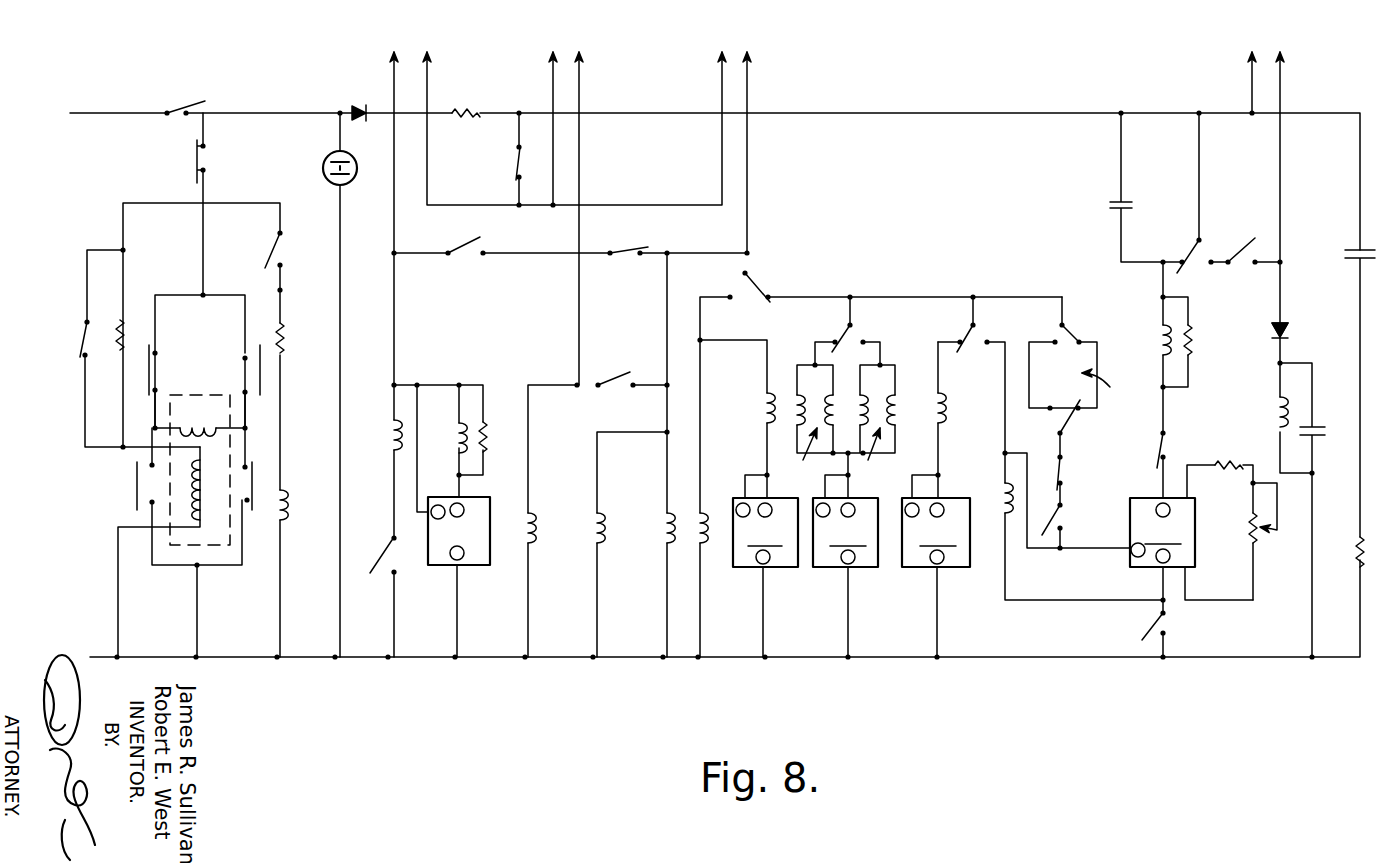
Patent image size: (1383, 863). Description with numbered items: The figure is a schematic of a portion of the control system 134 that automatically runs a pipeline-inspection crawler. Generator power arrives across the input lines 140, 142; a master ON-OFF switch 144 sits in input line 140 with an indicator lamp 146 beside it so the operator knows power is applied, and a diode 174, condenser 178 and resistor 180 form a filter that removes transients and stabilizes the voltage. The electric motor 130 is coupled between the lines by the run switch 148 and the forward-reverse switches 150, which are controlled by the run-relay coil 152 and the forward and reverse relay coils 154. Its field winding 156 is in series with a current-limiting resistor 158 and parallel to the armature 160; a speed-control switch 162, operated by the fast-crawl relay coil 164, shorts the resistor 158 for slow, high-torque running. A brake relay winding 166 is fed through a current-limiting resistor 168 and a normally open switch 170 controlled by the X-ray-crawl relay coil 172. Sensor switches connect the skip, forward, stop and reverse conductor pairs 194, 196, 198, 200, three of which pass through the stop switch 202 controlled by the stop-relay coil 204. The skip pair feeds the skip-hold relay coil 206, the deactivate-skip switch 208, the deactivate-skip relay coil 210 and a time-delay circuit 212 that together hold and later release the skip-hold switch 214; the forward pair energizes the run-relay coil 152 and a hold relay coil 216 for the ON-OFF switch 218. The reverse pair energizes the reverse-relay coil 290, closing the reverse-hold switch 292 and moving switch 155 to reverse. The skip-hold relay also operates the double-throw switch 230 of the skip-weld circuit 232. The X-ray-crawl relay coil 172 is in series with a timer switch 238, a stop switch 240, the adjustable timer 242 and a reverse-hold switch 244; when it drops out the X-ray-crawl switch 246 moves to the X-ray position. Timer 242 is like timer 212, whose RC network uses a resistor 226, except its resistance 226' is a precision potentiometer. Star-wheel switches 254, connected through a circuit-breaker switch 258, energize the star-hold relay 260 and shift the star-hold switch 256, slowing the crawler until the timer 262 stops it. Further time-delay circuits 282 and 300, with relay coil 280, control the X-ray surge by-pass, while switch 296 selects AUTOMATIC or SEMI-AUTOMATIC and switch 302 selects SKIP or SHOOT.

The electric motor 130 is at (218, 375).
The control system 134 is at (550, 677).
The input line 140 is at (114, 113).
The input line 142 is at (101, 657).
The master ON-OFF switch 144 is at (182, 105).
The indicator lamp 146 is at (322, 165).
The run switch 148 is at (194, 161).
The forward-reverse switch 150 is at (153, 355).
The run-relay coil 152 is at (666, 543).
The forward and reverse relay coils 154 is at (838, 430).
The reverse switch 155 is at (838, 336).
The field winding 156 is at (180, 504).
The current-limiting resistor 158 is at (115, 328).
The armature 160 is at (215, 426).
The speed-control switch 162 is at (85, 350).
The fast-crawl relay coil 164 is at (943, 423).
The brake relay winding 166 is at (292, 510).
The current-limiting resistor 168 is at (284, 334).
The brake switch 170 is at (271, 255).
The X-ray-crawl relay coil 172 is at (1160, 333).
The diode 174 is at (360, 103).
The condenser 178 is at (1358, 250).
The resistor 180 is at (1353, 557).
The skip pair of conductors 194 is at (420, 62).
The forward pair of conductors 196 is at (745, 62).
The stop pair of conductors 198 is at (1253, 66).
The reverse pair of conductors 200 is at (580, 58).
The stop switch 202 is at (515, 162).
The stop-relay coil 204 is at (1273, 412).
The skip-hold relay coil 206 is at (386, 424).
The deactivate-skip switch 208 is at (378, 568).
The deactivate-skip relay coil 210 is at (457, 421).
The time-delay circuit 212 is at (474, 558).
The skip-hold switch 214 is at (498, 230).
The hold relay coil 216 is at (600, 516).
The ON-OFF switch 218 is at (628, 256).
The resistor 226 is at (722, 476).
The precision potentiometer 226' is at (1249, 530).
The double-throw switch 230 is at (1074, 334).
The skip-weld circuit 232 is at (1117, 389).
The timer switch 238 is at (1184, 255).
The stop switch 240 is at (1157, 455).
The adjustable timer 242 is at (1191, 555).
The reverse-hold switch 244 is at (1165, 625).
The X-ray-crawl switch 246 is at (756, 284).
The star-wheel switches 254 is at (1068, 510).
The star-hold switch 256 is at (964, 336).
The circuit-breaker switch 258 is at (1068, 467).
The star-hold relay 260 is at (1005, 497).
The timer 262 is at (936, 579).
The relay coil 280 is at (765, 406).
The time-delay circuit 282 is at (765, 579).
The reverse-relay coil 290 is at (537, 525).
The reverse-hold switch 292 is at (630, 392).
The automatic/semi-automatic switch 296 is at (1242, 255).
The time-delay circuit 300 is at (845, 579).
The skip/shoot switch 302 is at (1067, 423).